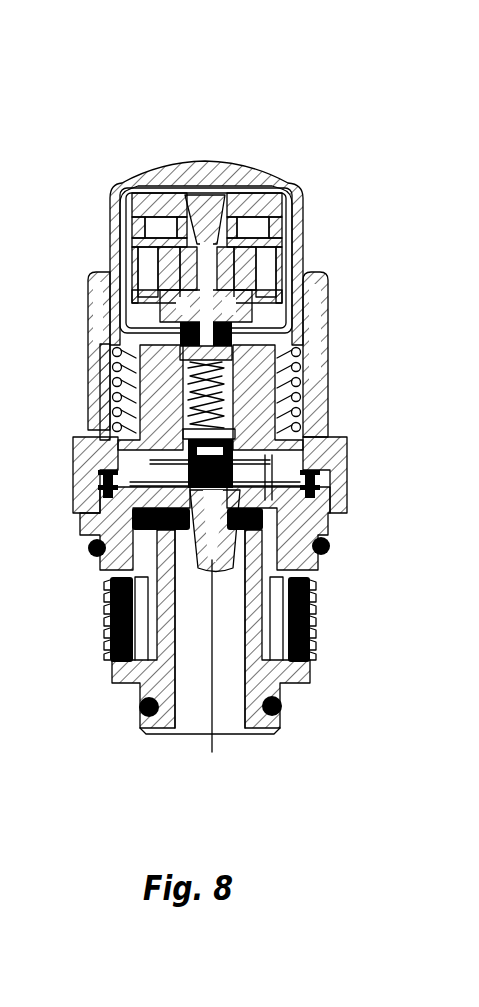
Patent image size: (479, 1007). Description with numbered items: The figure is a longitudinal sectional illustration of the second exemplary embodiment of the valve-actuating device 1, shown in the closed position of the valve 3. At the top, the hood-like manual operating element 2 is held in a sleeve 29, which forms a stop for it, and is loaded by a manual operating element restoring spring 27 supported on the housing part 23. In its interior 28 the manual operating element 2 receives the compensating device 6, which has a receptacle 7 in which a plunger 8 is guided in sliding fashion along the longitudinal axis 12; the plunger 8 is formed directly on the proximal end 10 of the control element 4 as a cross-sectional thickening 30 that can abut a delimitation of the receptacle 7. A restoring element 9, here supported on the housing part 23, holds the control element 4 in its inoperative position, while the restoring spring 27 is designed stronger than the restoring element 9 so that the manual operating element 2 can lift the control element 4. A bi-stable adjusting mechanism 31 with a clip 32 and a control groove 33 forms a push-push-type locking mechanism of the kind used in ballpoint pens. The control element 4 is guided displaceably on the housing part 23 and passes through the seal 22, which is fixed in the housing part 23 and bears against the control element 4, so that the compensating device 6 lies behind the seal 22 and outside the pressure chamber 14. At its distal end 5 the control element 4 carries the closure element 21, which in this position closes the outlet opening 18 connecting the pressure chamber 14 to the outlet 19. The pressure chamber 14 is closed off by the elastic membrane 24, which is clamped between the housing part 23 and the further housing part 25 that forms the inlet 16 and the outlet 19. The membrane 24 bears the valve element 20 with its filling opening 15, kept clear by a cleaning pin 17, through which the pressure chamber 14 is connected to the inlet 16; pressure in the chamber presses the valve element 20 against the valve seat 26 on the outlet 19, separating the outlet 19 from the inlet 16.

The valve-actuating device 1 is at (216, 410).
The manual operating element 2 is at (239, 253).
The valve 3 is at (113, 530).
The control element 4 is at (285, 367).
The distal end 5 is at (285, 439).
The compensating device 6 is at (139, 260).
The receptacle 7 is at (273, 177).
The plunger 8 is at (203, 160).
The restoring element 9 is at (324, 385).
The proximal end 10 is at (307, 270).
The longitudinal axis 12 is at (187, 690).
The pressure chamber 14 is at (79, 467).
The filling opening 15 is at (318, 555).
The inlet 16 is at (338, 622).
The cleaning pin 17 is at (262, 601).
The outlet opening 18 is at (118, 567).
The outlet 19 is at (183, 642).
The valve element 20 is at (93, 625).
The closure element 21 is at (348, 473).
The seal 22 is at (291, 332).
The housing part 23 is at (67, 351).
The membrane 24 is at (313, 531).
The further housing part 25 is at (334, 642).
The valve seat 26 is at (209, 653).
The manual operating element restoring spring 27 is at (77, 391).
The interior 28 is at (133, 154).
The sleeve 29 is at (364, 354).
The cross-sectional thickening 30 is at (159, 188).
The bi-stable adjusting mechanism 31 is at (65, 377).
The clip 32 is at (247, 247).
The control groove 33 is at (369, 332).